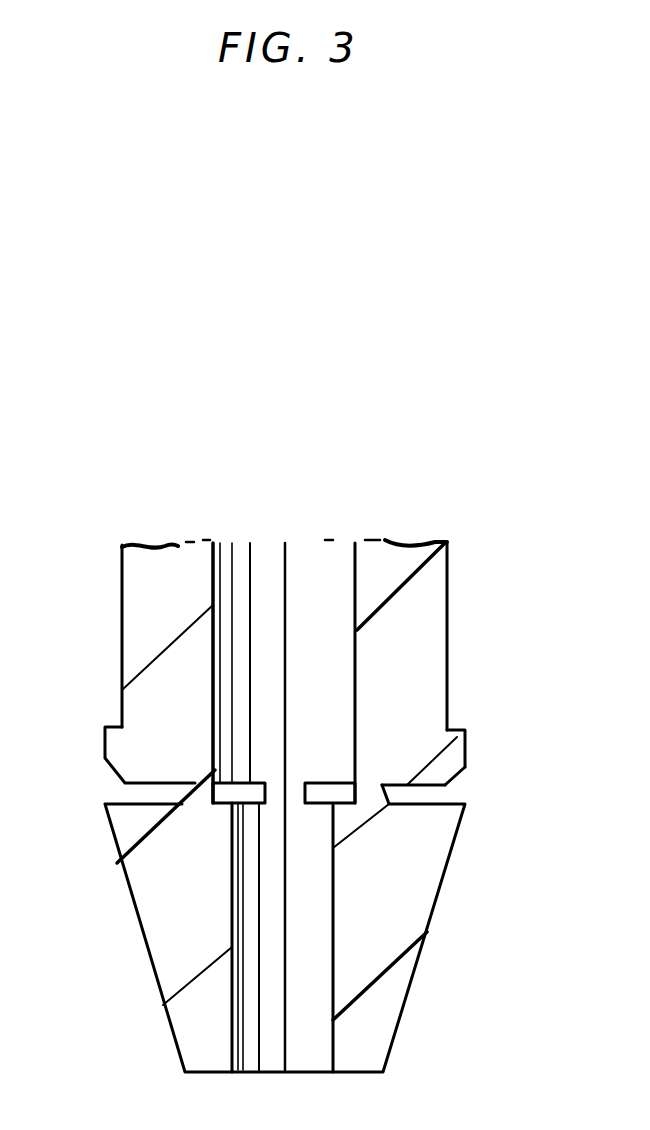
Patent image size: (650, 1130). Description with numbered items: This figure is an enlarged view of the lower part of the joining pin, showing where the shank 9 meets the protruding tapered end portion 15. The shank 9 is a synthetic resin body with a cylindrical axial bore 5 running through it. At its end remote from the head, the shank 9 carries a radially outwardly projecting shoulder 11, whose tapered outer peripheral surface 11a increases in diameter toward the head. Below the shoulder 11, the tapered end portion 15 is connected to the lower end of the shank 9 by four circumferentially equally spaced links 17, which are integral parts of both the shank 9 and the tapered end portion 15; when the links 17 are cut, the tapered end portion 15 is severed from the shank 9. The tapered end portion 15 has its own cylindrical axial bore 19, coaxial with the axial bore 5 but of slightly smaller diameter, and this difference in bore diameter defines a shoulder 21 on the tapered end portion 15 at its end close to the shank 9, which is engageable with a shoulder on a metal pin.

The cylindrical axial bore 5 is at (355, 573).
The shank 9 is at (430, 593).
The shoulder 11 is at (452, 750).
The tapered outer peripheral surface 11a is at (452, 778).
The protruding tapered end portion 15 is at (405, 907).
The links 17 is at (200, 797).
The cylindrical axial bore 19 is at (238, 1012).
The shoulder 21 is at (340, 805).